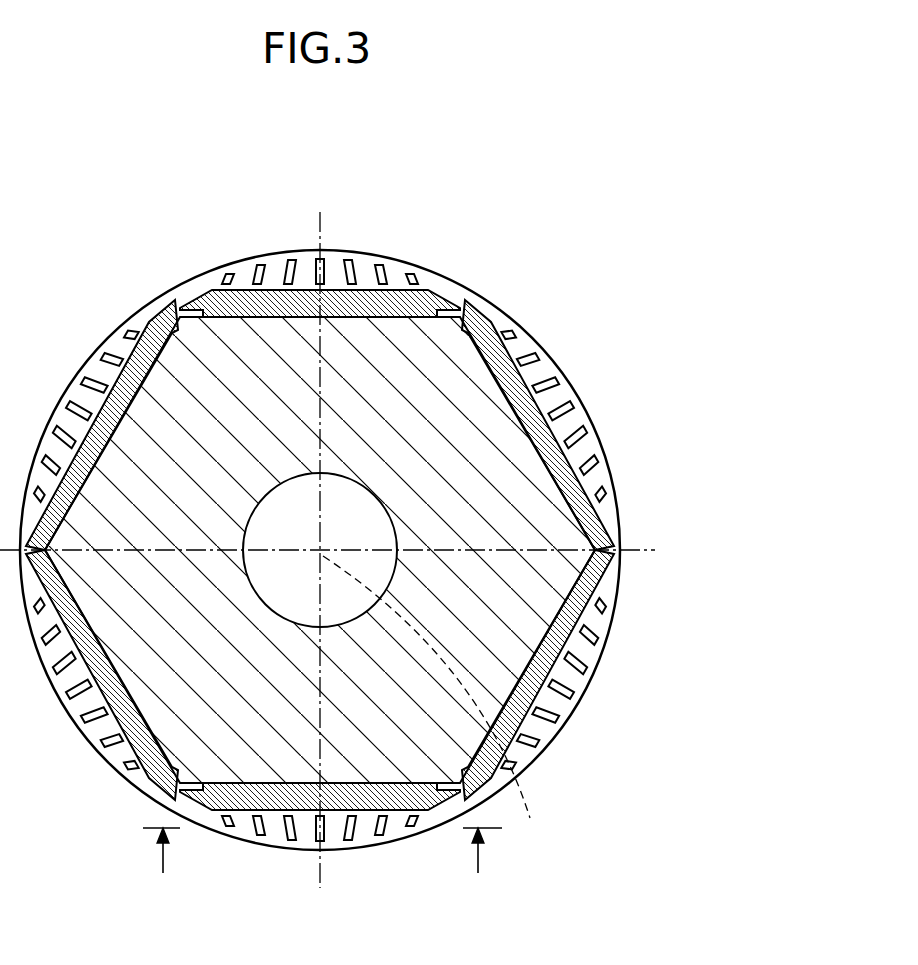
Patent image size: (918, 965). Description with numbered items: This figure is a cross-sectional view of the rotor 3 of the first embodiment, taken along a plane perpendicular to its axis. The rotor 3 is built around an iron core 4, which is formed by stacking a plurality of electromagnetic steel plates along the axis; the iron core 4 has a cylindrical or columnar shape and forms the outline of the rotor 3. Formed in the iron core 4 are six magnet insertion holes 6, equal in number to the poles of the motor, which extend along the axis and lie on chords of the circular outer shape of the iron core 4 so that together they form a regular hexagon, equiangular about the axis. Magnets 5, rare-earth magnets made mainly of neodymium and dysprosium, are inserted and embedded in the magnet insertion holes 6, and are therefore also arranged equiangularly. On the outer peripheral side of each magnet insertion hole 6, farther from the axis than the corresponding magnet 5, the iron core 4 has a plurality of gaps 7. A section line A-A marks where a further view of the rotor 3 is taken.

The rotor 3 is at (615, 206).
The iron core 4 is at (185, 365).
The magnet 5 is at (548, 452).
The magnet insertion hole 6 is at (575, 432).
The gap 7 is at (258, 272).